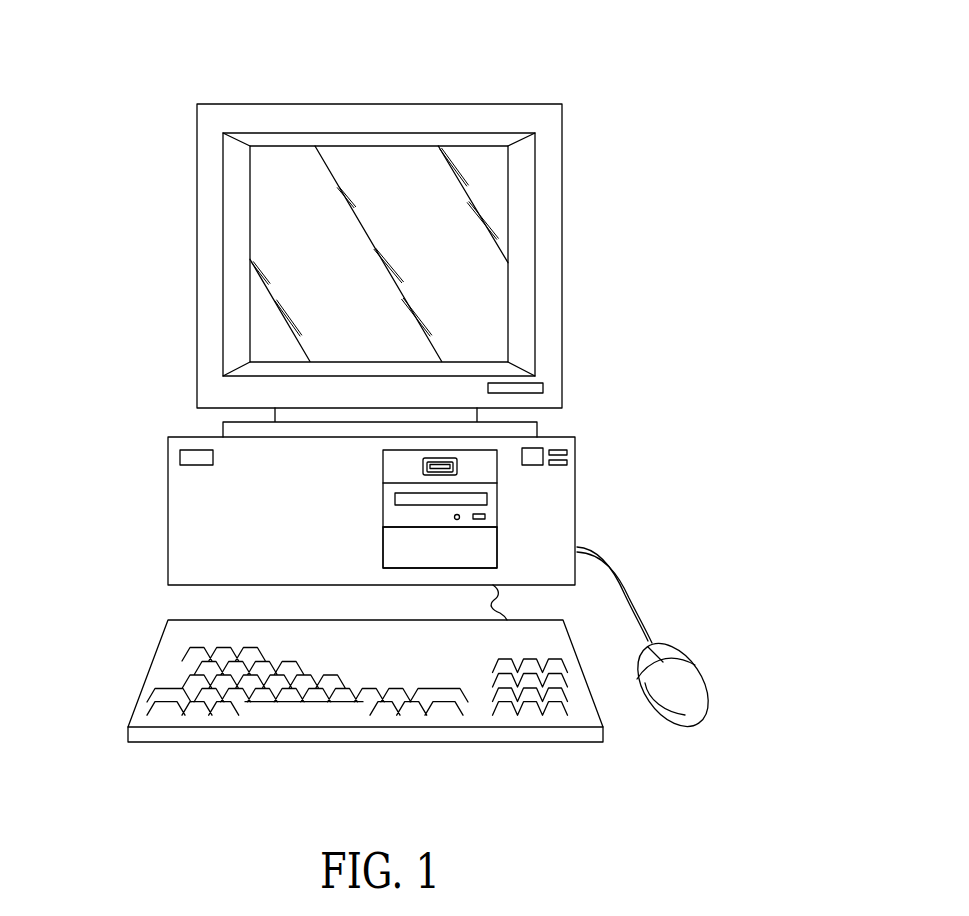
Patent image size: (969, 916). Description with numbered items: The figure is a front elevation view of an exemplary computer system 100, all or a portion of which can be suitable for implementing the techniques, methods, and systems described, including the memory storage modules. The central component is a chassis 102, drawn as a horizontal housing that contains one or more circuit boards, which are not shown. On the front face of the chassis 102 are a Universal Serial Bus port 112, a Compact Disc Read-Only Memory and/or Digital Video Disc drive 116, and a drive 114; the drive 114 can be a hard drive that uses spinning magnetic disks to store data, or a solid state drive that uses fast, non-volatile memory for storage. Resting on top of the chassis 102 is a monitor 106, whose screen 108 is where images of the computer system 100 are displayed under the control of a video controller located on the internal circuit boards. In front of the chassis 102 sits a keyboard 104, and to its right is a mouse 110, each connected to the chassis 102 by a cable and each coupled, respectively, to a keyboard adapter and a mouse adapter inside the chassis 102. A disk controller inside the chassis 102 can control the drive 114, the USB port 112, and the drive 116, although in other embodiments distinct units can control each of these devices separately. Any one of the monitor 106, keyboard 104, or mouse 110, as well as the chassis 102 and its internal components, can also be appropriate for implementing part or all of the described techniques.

The computer system 100 is at (556, 76).
The chassis 102 is at (168, 512).
The keyboard 104 is at (148, 668).
The monitor 106 is at (271, 103).
The screen 108 is at (297, 259).
The mouse 110 is at (690, 673).
The Universal Serial Bus (USB) port 112 is at (462, 462).
The drive 114 is at (488, 545).
The CD-ROM and/or DVD drive 116 is at (490, 507).